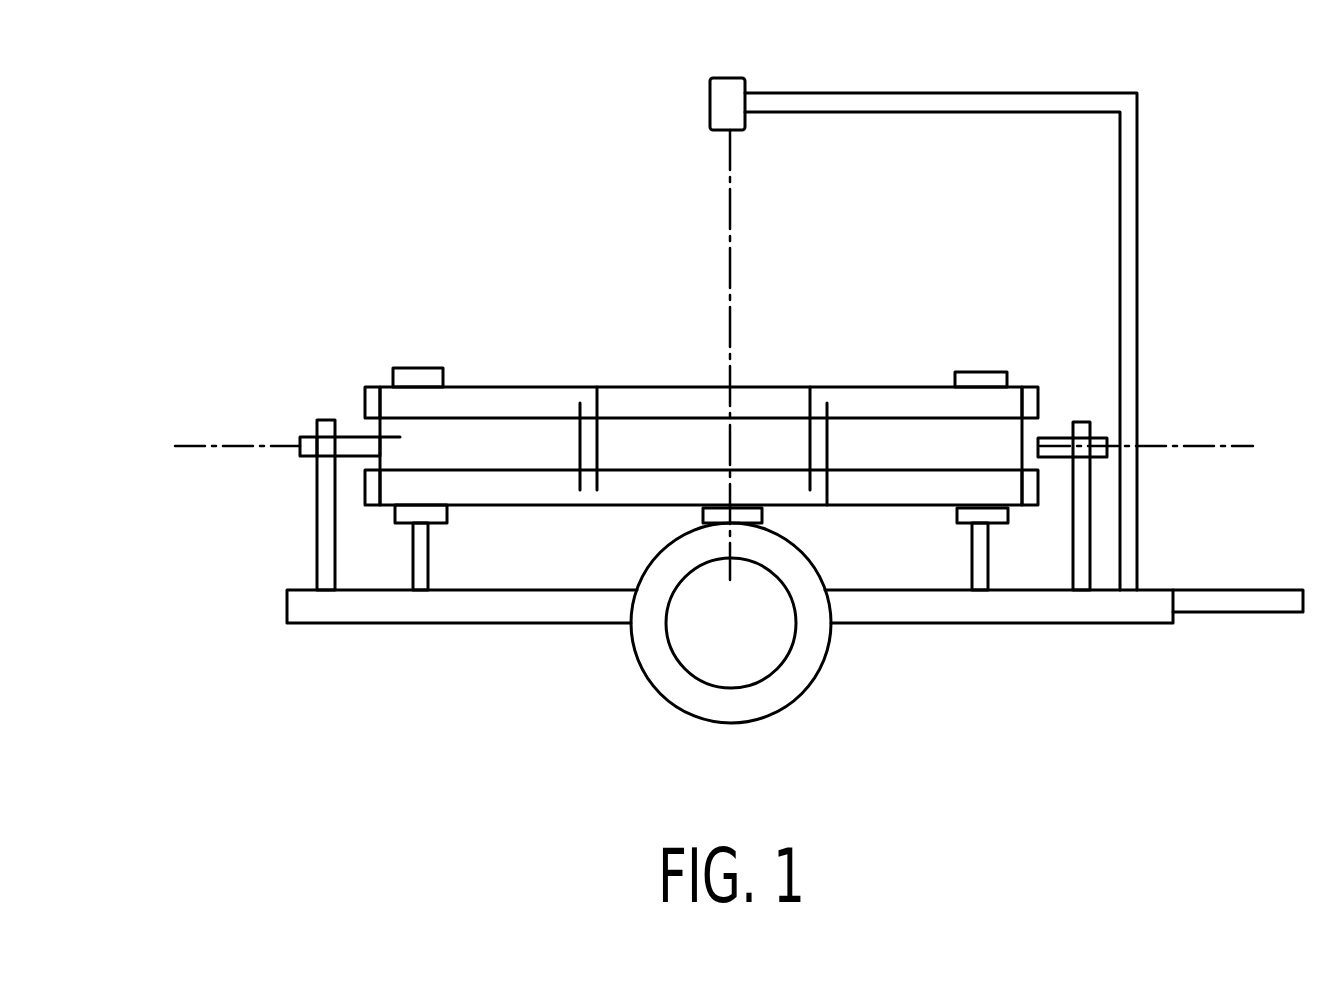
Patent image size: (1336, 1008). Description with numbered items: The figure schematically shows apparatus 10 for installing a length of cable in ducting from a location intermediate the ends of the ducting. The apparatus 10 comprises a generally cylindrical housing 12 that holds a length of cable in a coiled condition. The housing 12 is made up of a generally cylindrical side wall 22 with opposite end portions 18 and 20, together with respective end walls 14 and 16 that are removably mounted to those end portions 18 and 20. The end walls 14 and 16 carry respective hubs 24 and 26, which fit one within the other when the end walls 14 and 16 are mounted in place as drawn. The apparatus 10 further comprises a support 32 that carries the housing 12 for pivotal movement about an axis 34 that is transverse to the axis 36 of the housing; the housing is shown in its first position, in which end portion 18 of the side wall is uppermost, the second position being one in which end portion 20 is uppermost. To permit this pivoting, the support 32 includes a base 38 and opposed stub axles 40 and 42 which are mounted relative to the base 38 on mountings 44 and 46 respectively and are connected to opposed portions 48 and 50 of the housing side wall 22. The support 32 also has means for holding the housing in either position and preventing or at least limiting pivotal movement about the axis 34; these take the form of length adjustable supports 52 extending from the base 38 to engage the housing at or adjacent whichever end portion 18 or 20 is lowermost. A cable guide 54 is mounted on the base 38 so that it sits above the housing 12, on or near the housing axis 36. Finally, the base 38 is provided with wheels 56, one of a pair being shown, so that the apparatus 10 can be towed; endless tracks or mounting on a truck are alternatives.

The apparatus 10 is at (232, 308).
The housing 12 is at (825, 330).
The end wall 14 is at (647, 385).
The end wall 16 is at (528, 507).
The end portion 18 is at (365, 387).
The end portion 20 is at (367, 508).
The side wall 22 is at (382, 462).
The hub 24 is at (800, 440).
The hub 26 is at (833, 452).
The support 32 is at (562, 684).
The axis 34 is at (222, 446).
The axis 36 is at (724, 238).
The base 38 is at (980, 610).
The stub axle 40 is at (1052, 440).
The stub axle 42 is at (355, 442).
The mounting 44 is at (1083, 526).
The mounting 46 is at (317, 535).
The opposed portion 48 is at (1017, 450).
The opposed portion 50 is at (405, 447).
The length adjustable supports 52 is at (432, 570).
The cable guide 54 is at (710, 100).
The wheels 56 is at (688, 695).